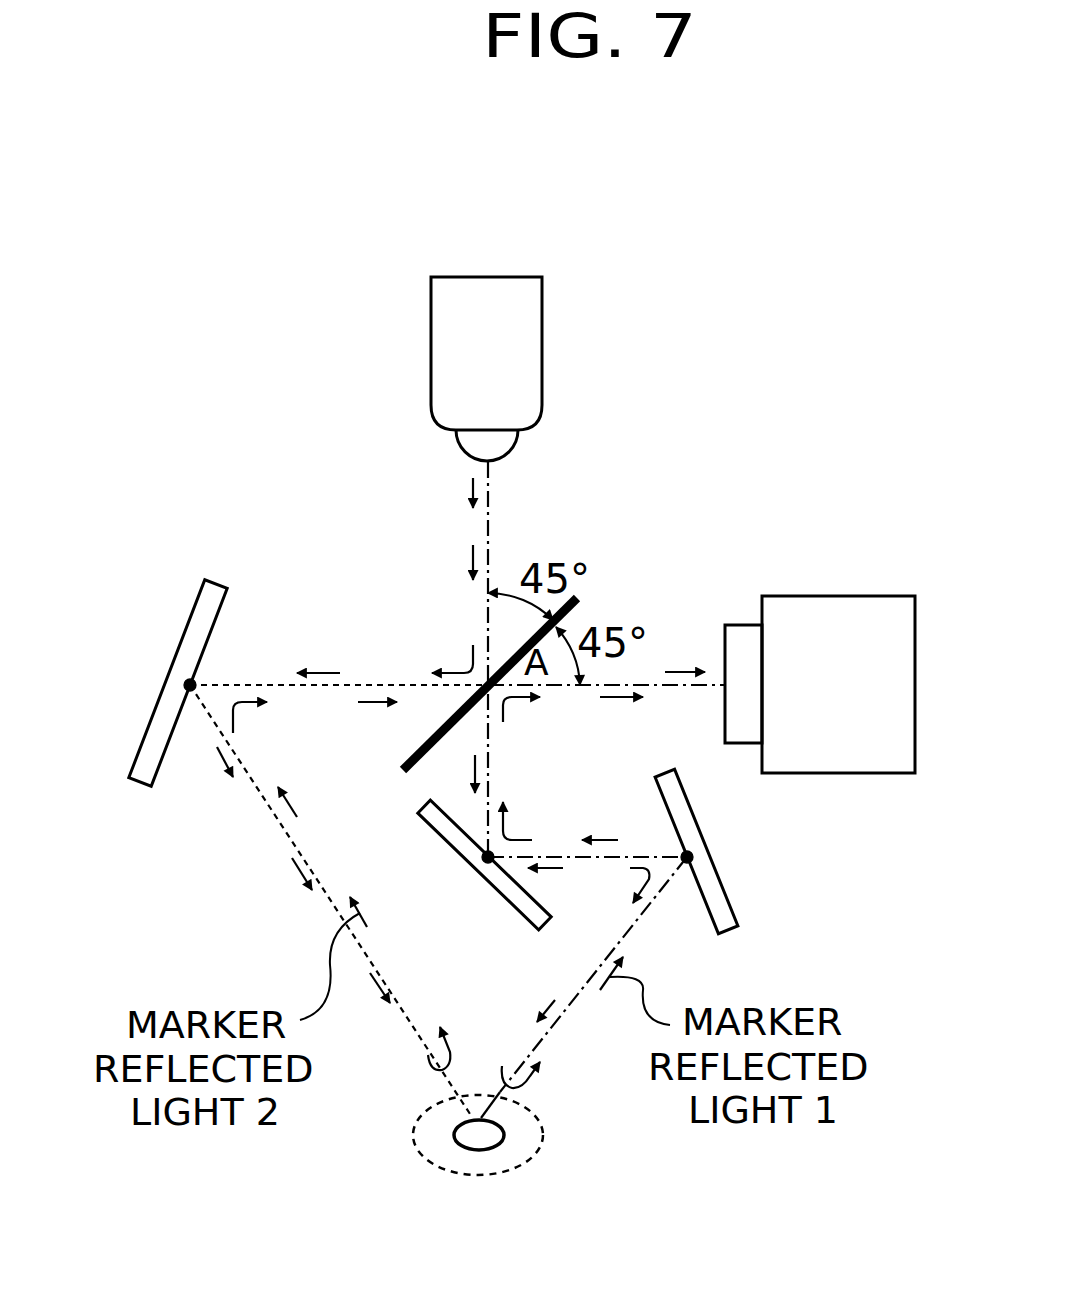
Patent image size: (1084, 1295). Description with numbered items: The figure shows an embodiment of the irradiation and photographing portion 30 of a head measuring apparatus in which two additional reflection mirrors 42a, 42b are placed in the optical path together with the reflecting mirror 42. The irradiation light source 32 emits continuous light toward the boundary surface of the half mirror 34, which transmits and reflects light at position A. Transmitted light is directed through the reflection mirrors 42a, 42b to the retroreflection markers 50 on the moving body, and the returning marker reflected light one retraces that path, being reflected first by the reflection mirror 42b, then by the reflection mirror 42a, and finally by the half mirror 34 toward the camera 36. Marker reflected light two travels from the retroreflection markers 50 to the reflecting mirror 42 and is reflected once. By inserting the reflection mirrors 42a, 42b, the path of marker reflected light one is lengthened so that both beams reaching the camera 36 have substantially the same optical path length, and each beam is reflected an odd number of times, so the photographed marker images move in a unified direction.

The irradiation and photographing portion 30 is at (177, 226).
The irradiation light source 32 is at (525, 338).
The half mirror 34 is at (583, 595).
The camera 36 is at (850, 605).
The reflecting mirror 42 is at (213, 588).
The reflection mirror 42a is at (512, 895).
The reflection mirror 42b is at (712, 873).
The retroreflection markers 50 is at (492, 1135).